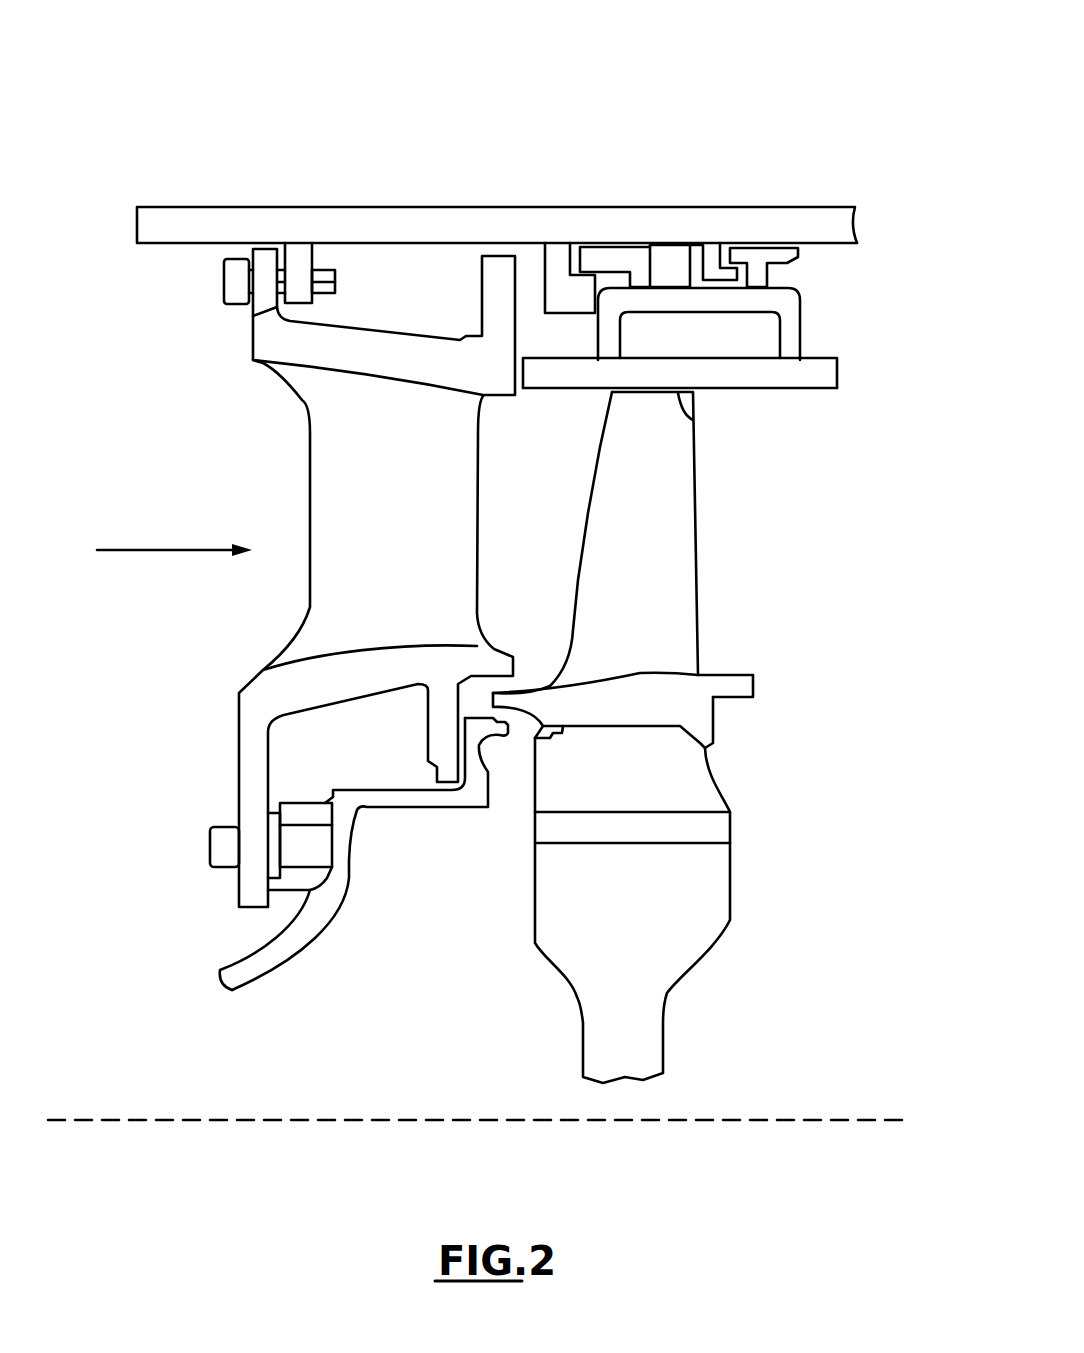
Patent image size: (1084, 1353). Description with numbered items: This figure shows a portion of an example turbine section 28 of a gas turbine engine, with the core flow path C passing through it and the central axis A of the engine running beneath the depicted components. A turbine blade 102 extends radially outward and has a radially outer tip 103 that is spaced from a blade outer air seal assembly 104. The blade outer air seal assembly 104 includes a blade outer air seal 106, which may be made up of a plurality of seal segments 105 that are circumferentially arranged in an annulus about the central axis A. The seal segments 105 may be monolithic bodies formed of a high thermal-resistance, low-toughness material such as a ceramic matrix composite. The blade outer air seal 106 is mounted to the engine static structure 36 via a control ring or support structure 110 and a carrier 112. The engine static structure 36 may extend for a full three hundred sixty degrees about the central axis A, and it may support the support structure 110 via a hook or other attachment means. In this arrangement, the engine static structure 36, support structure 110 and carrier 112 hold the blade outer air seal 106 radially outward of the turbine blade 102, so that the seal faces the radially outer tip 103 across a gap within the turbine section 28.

The turbine section 28 is at (782, 88).
The engine static structure 36 is at (202, 223).
The turbine blade 102 is at (683, 512).
The radially outer tip 103 is at (697, 420).
The blade outer air seal assembly 104 is at (856, 300).
The seal segment 105 is at (823, 367).
The blade outer air seal 106 is at (820, 377).
The support structure 110 is at (585, 220).
The carrier 112 is at (642, 267).
The core flow path C is at (127, 548).
The central axis A is at (847, 1120).